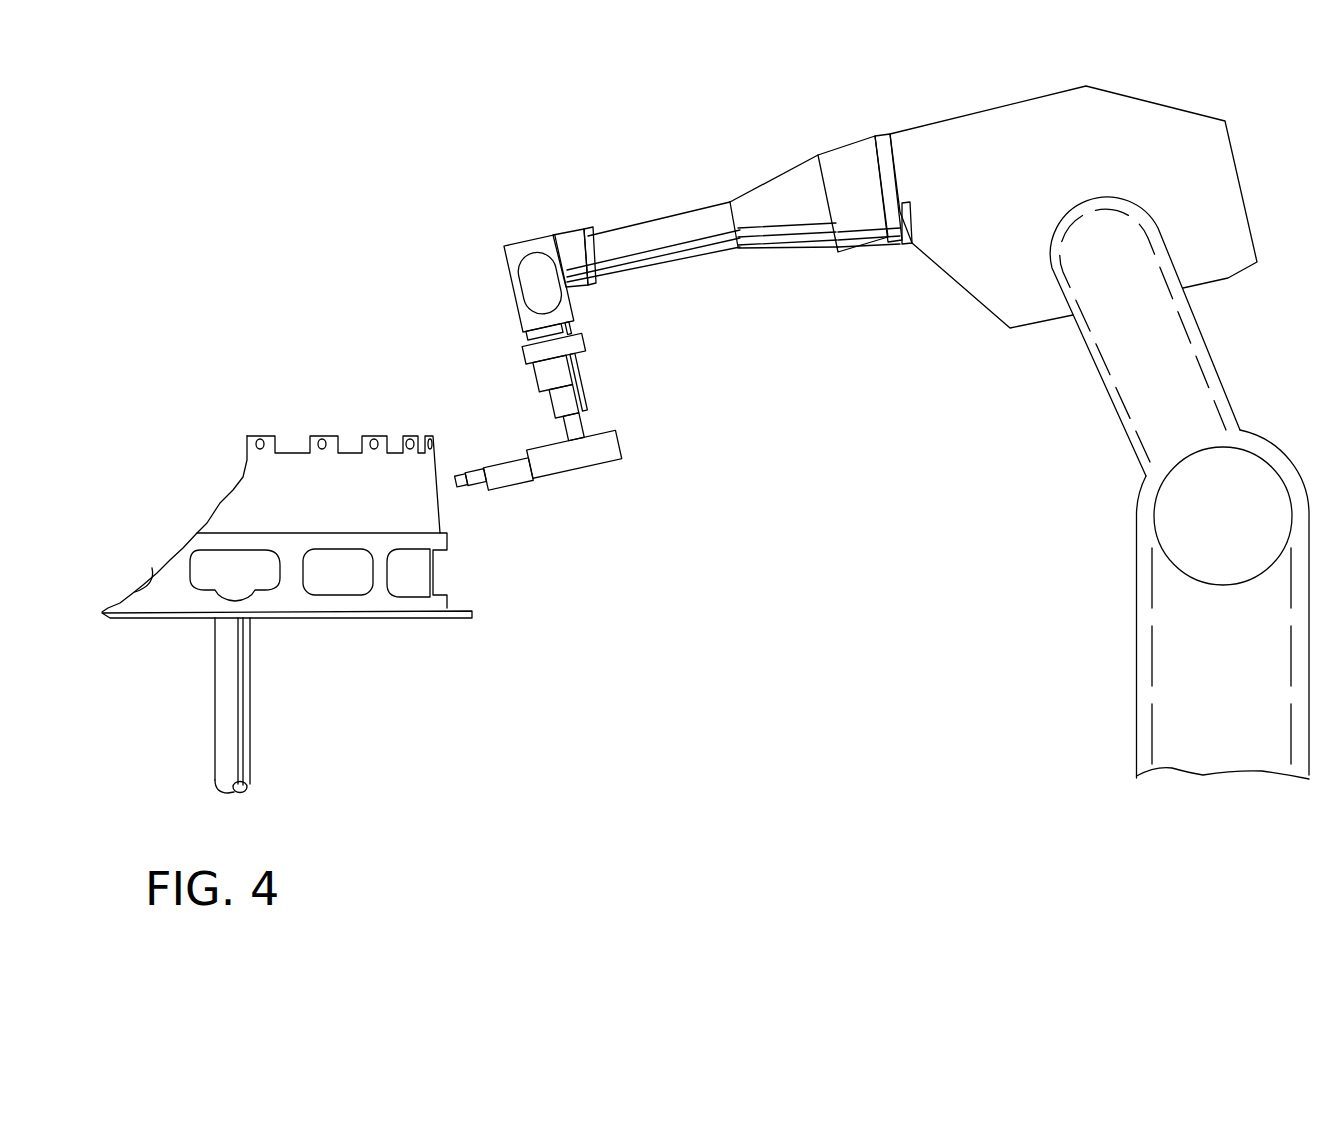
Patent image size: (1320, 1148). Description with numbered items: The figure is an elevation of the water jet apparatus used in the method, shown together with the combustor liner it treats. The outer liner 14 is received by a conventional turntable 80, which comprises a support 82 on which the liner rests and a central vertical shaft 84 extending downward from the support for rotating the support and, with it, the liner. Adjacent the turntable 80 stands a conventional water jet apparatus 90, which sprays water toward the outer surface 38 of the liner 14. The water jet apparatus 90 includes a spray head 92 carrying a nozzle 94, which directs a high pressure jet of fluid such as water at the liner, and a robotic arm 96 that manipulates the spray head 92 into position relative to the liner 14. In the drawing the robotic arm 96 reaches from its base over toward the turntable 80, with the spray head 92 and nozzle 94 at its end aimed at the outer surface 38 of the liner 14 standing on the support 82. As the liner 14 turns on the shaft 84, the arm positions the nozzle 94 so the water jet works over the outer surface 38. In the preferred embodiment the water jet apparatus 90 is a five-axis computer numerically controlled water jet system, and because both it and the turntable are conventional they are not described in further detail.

The outer liner 14 is at (335, 422).
The outer surface 38 is at (312, 508).
The turntable 80 is at (480, 612).
The support 82 is at (343, 618).
The central vertical shaft 84 is at (250, 700).
The water jet apparatus 90 is at (660, 208).
The spray head 92 is at (578, 475).
The nozzle 94 is at (472, 490).
The robotic arm 96 is at (1112, 400).